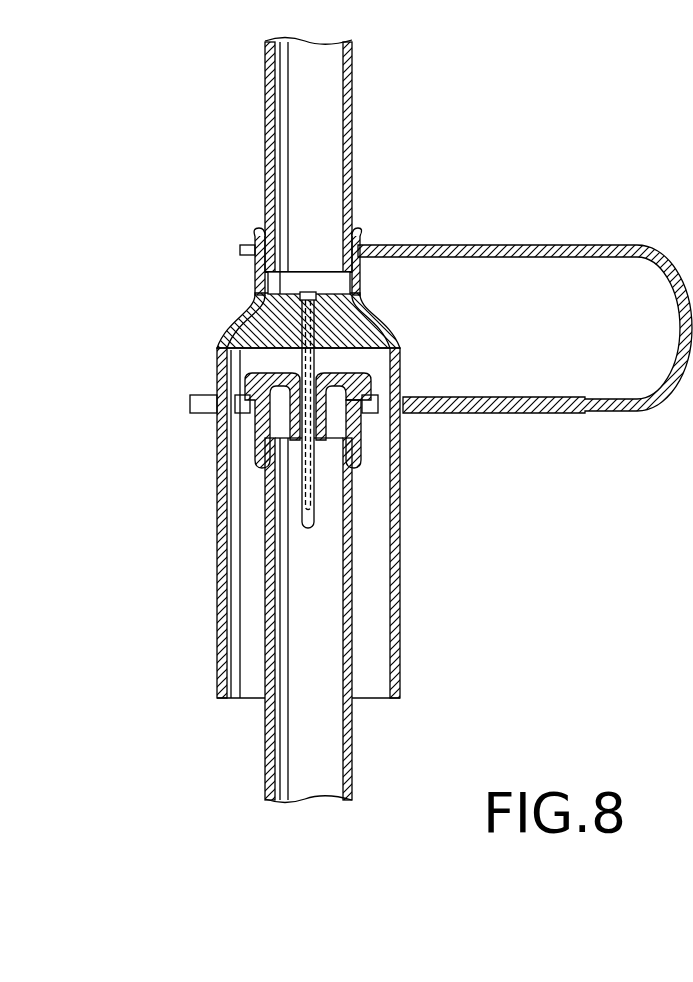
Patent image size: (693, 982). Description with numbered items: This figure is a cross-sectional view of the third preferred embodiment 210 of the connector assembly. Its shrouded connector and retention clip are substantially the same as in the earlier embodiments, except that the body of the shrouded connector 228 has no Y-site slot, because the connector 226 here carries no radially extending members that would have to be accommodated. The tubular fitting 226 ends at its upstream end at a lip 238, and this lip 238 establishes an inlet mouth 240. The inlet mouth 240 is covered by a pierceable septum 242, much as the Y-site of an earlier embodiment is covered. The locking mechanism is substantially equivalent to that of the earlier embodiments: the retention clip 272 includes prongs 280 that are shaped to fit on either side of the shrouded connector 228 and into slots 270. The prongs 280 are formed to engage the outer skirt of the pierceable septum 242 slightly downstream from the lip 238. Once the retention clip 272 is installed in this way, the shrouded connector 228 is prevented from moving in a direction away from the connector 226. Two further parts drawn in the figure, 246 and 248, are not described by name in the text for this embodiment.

The alternative embodiment 210 is at (190, 538).
The tubular fitting 226 is at (263, 752).
The shrouded connector 228 is at (407, 648).
The lip 238 is at (347, 395).
The inlet mouth 240 is at (323, 375).
The pierceable septum 242 is at (253, 383).
The clamp leg 246 is at (362, 432).
The housing liner wall 248 is at (217, 602).
The slots 270 is at (242, 413).
The retention clip 272 is at (550, 415).
The prongs 280 is at (190, 402).